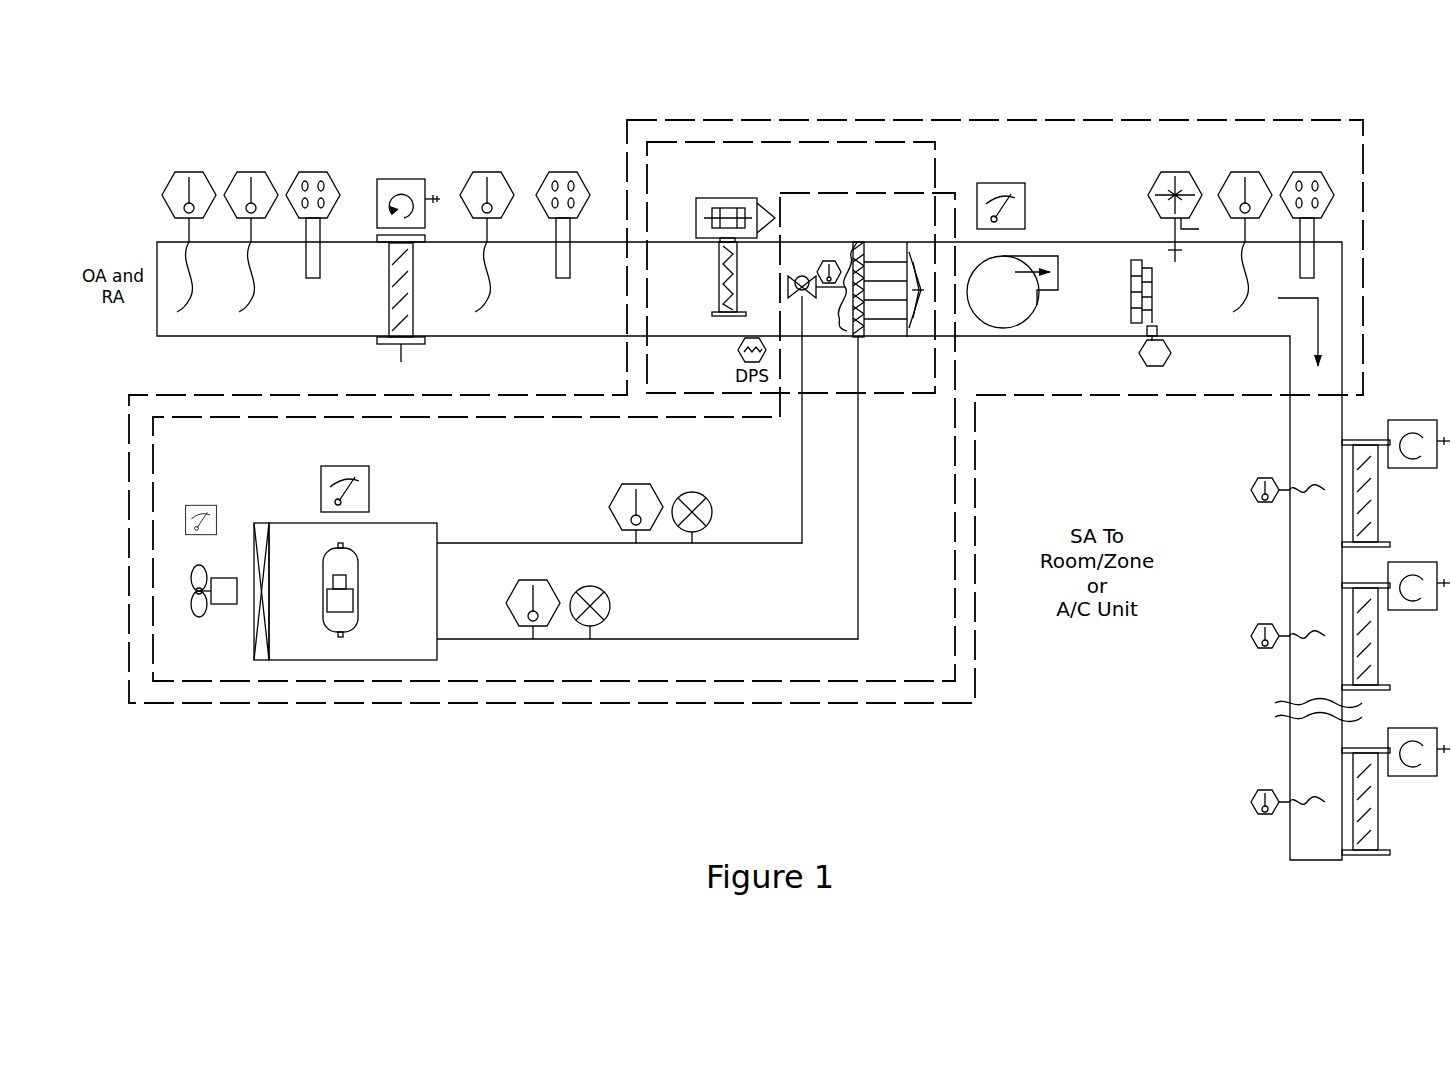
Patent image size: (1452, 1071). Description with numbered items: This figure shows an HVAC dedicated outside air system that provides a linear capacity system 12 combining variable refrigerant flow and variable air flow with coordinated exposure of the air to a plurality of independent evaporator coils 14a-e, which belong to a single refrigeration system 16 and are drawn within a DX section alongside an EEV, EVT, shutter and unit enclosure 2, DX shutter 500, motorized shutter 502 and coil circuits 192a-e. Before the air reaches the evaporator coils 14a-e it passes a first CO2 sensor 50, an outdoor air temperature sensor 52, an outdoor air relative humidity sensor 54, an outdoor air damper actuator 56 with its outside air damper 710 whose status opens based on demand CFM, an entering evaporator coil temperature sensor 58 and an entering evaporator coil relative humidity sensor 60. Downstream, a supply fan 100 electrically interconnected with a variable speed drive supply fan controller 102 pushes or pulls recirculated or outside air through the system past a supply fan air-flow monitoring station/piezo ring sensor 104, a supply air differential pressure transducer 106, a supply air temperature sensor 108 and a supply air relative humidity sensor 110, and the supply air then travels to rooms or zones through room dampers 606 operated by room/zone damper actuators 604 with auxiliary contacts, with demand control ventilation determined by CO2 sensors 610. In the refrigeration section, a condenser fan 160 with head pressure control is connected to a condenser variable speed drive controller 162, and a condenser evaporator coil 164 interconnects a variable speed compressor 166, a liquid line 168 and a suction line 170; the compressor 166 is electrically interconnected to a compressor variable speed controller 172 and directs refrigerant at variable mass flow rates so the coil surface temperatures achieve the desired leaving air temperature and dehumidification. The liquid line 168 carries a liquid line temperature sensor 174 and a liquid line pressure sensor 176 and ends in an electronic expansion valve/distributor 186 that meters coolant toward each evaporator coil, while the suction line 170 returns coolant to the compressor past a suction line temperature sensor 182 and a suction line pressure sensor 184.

The refrigeration unit enclosure 2 is at (830, 140).
The linear capacity system 12 is at (791, 118).
The refrigeration system 16 is at (869, 190).
The first CO2 sensor 50 is at (188, 140).
The outdoor air temperature sensor 52 is at (251, 140).
The outdoor air relative humidity sensor 54 is at (314, 140).
The outdoor air damper actuator 56 is at (400, 145).
The entering evaporator coil temperature sensor 58 is at (484, 142).
The entering evaporator coil relative humidity sensor 60 is at (560, 142).
The supply fan 100 is at (1010, 328).
The variable speed drive supply fan controller 102 is at (1003, 152).
The supply fan air-flow monitoring station/piezo ring sensor 104 is at (1142, 369).
The supply air differential pressure transducer 106 is at (1178, 140).
The supply air temperature sensor 108 is at (1247, 140).
The supply air relative humidity sensor 110 is at (1309, 140).
The independent evaporator coils 14a-e is at (924, 293).
The condenser fan 160 is at (200, 619).
The condenser variable speed drive controller 162 is at (199, 455).
The condenser evaporator coil 164 is at (265, 663).
The variable speed compressor 166 is at (362, 663).
The liquid line 168 is at (485, 541).
The suction line 170 is at (667, 642).
The compressor variable speed controller 172 is at (343, 428).
The liquid line temperature sensor 174 is at (611, 493).
The liquid line pressure sensor 176 is at (684, 493).
The suction line temperature sensor 182 is at (533, 668).
The suction line pressure sensor 184 is at (590, 669).
The electronic expansion valve/distributor 186 is at (807, 299).
The evaporator coil circuits 192a-e is at (859, 340).
The DX shutter 500 is at (714, 293).
The motorized shutter 502 is at (728, 152).
The room/zone damper actuator with auxiliary contacts 604 is at (1406, 470).
The room damper 606 is at (1299, 432).
The CO2 sensor 610 is at (1204, 489).
The outside air damper 710 is at (414, 292).